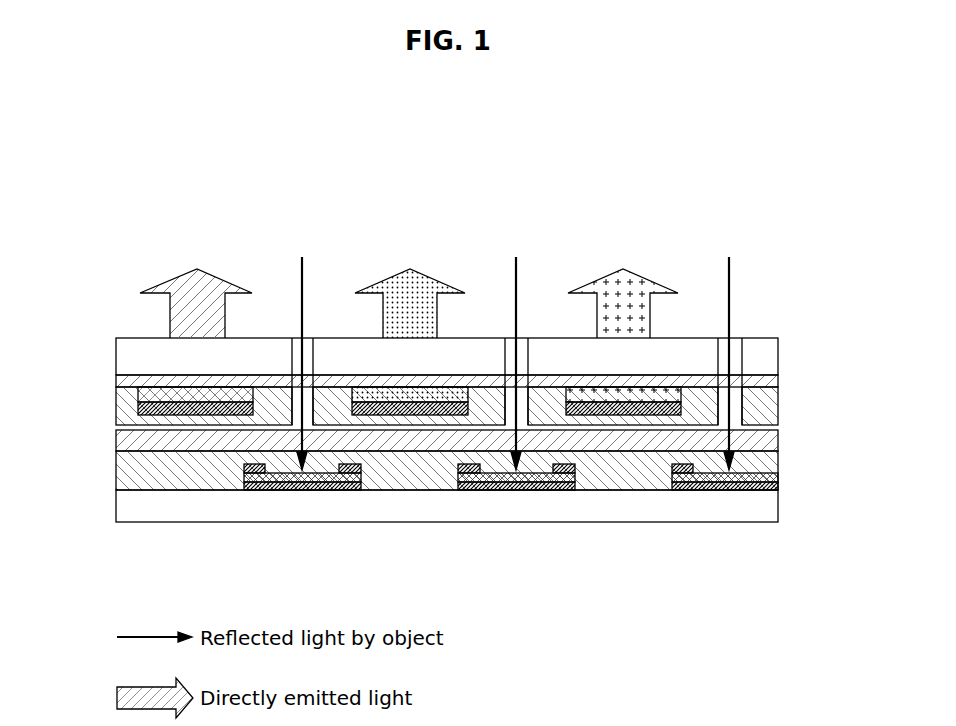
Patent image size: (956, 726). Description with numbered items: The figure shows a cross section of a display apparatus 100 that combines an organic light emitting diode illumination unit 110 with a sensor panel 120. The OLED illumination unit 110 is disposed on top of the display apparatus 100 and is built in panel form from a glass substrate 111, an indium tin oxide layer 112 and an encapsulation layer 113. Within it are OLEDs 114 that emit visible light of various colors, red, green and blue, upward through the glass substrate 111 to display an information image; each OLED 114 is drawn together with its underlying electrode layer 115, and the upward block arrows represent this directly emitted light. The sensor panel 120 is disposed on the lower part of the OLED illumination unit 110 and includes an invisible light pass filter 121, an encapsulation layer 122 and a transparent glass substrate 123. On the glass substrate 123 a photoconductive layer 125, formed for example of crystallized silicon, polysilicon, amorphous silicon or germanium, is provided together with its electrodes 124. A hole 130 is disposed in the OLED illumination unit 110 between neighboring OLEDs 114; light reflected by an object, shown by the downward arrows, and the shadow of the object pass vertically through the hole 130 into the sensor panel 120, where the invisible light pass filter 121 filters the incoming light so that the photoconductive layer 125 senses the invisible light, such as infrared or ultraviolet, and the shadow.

The display apparatus 100 is at (460, 112).
The OLED illumination unit 110 is at (446, 380).
The glass substrate 111 is at (122, 351).
The indium tin oxide (ITO) 112 is at (121, 382).
The encapsulation layer 113 is at (122, 418).
The OLED 114 is at (140, 397).
The pixel electrode 115 is at (140, 408).
The sensor panel 120 is at (446, 501).
The invisible light pass filter 121 is at (120, 440).
The sensor layer 122 is at (120, 472).
The glass substrate 123 is at (120, 504).
The sensor electrode 124 is at (258, 487).
The photoconductive layer 125 is at (360, 478).
The hole 130 is at (311, 351).